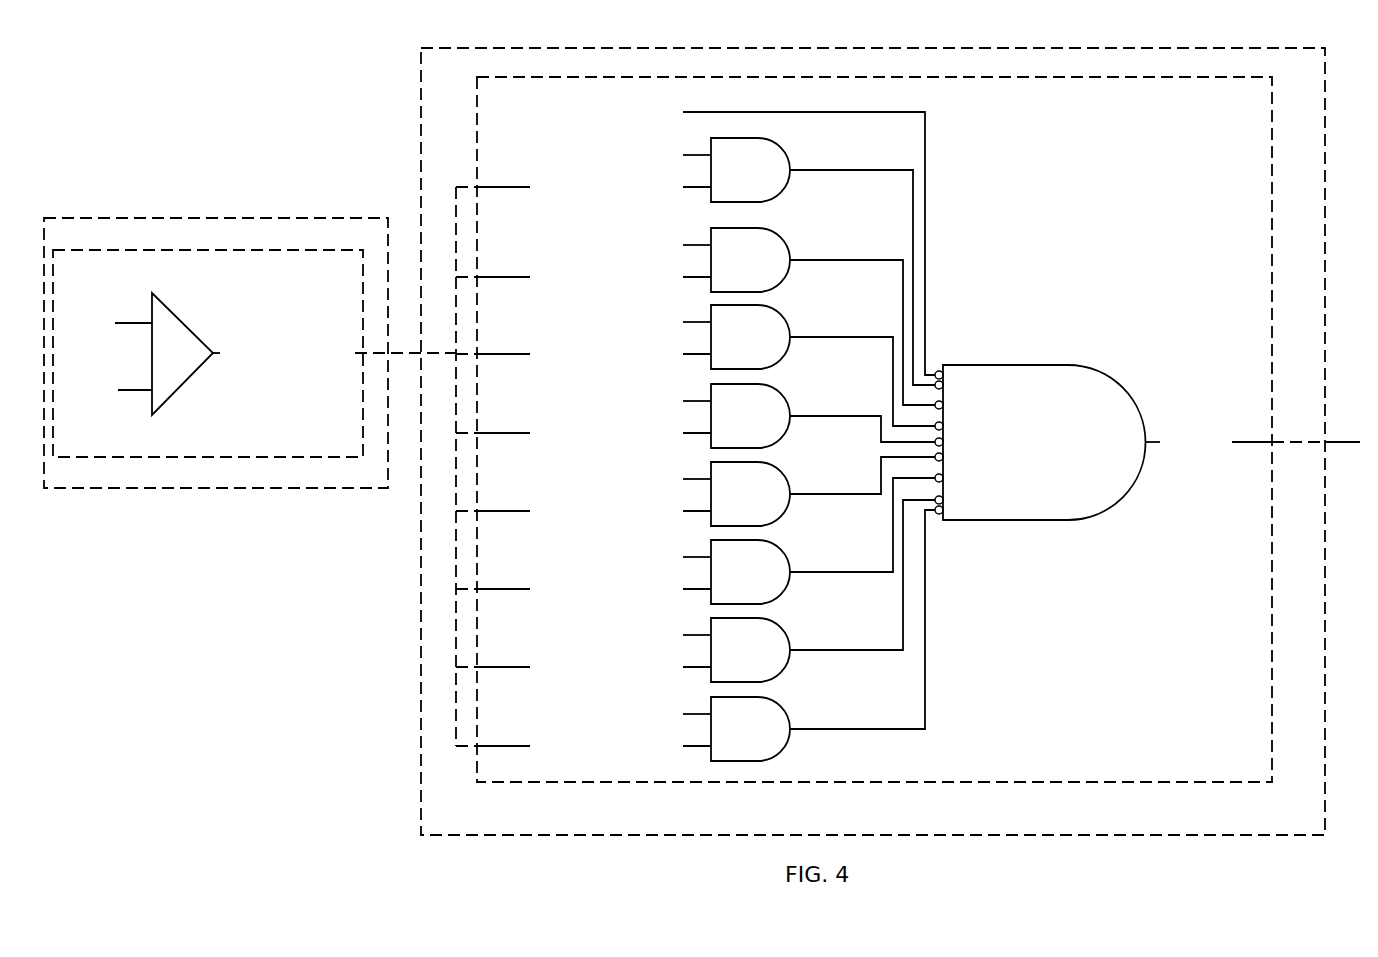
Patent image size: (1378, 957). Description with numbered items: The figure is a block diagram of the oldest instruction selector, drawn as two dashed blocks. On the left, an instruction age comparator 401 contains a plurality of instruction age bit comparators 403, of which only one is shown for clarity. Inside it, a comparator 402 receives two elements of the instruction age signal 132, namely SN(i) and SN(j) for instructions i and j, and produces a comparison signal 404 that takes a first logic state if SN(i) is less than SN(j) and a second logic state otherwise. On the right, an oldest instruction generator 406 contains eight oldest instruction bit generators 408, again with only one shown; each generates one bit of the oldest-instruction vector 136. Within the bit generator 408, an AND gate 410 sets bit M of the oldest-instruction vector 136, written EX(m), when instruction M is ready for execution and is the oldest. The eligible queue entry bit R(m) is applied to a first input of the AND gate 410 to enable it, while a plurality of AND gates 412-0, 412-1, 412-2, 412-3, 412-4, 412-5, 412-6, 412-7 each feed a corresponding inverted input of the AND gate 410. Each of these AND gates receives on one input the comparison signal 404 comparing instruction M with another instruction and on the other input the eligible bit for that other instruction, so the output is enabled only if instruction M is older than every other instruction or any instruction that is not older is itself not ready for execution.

The instruction age signal 132 is at (125, 322).
The oldest-instruction vector 136 is at (1330, 442).
The instruction age comparator 401 is at (183, 218).
The comparator 402 is at (192, 378).
The instruction age bit comparator 403 is at (200, 457).
The comparison signal 404 is at (214, 350).
The oldest instruction generator 406 is at (533, 48).
The oldest instruction bit generator 408 is at (790, 782).
The AND gate 410 is at (1092, 368).
The AND gate 412-0 is at (777, 142).
The AND gate 412-1 is at (777, 232).
The AND gate 412-2 is at (777, 309).
The AND gate 412-3 is at (777, 388).
The AND gate 412-4 is at (777, 466).
The AND gate 412-5 is at (777, 544).
The AND gate 412-6 is at (777, 622).
The AND gate 412-7 is at (777, 701).